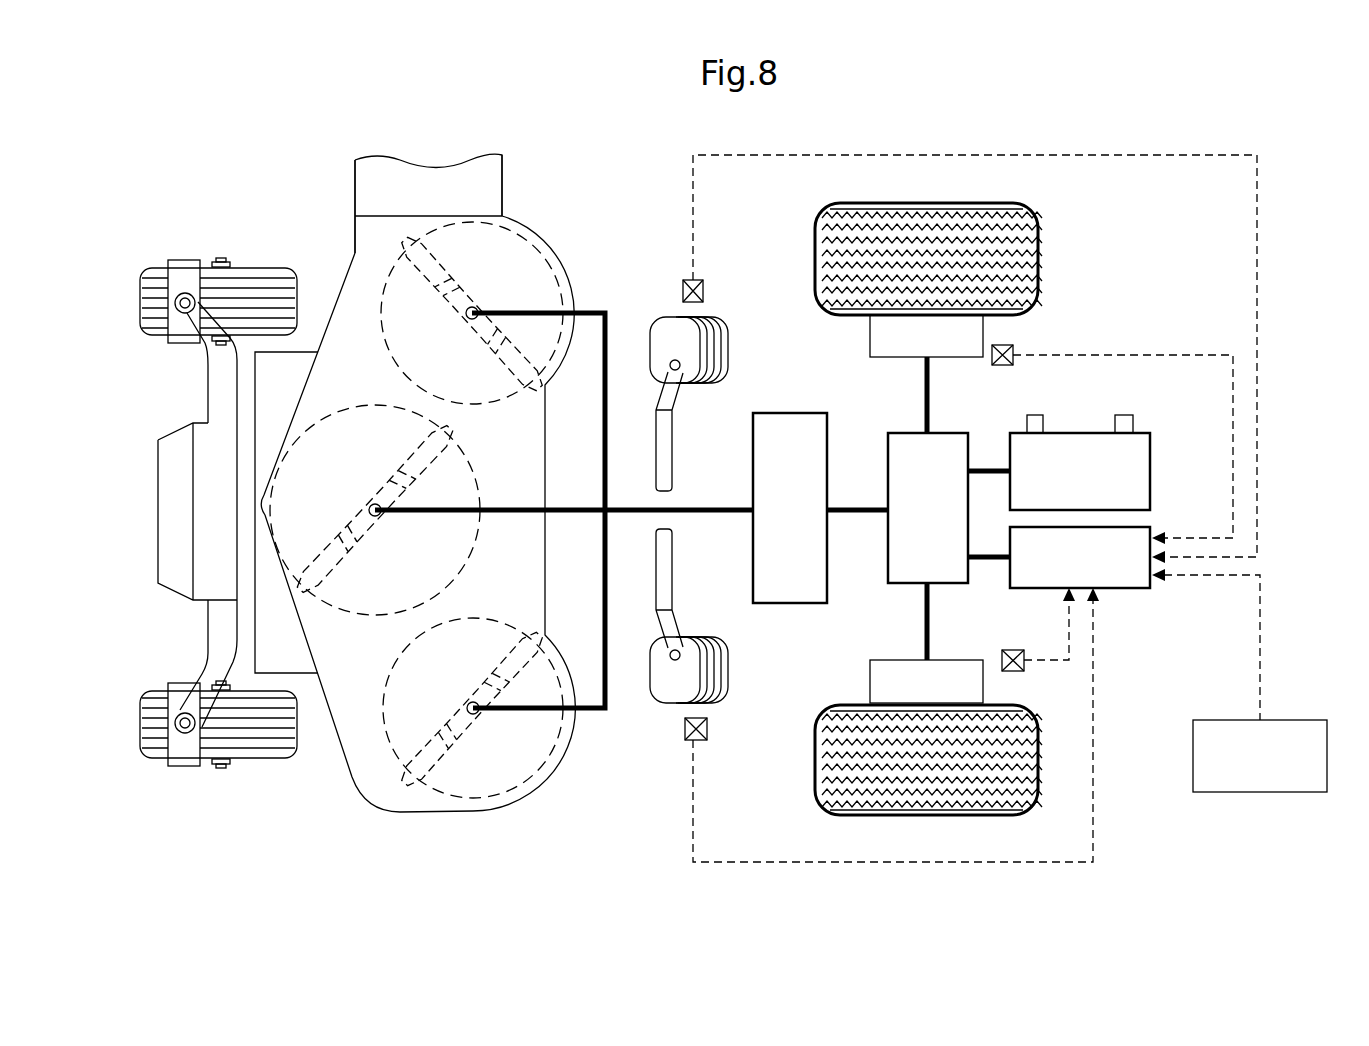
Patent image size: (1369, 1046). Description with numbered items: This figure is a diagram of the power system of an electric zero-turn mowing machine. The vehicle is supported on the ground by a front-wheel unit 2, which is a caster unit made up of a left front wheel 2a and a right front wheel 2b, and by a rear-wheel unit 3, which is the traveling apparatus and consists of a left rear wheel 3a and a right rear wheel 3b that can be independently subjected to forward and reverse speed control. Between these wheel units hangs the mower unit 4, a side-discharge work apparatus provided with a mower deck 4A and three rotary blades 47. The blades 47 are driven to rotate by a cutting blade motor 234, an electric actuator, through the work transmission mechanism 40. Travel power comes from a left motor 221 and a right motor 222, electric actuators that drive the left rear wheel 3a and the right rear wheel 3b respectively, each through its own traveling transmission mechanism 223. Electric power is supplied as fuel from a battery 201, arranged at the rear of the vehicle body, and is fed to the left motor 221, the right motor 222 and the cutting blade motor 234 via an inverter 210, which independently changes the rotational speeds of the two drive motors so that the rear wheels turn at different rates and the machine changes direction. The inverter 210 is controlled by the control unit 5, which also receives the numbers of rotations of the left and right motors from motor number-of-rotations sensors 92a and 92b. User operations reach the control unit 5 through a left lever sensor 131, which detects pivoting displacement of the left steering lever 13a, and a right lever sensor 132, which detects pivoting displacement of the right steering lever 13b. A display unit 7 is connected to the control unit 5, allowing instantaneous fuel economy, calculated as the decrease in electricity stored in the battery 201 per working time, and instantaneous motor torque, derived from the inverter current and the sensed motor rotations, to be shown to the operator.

The front-wheel unit 2 is at (181, 520).
The left front wheel 2a is at (162, 758).
The right front wheel 2b is at (140, 285).
The rear-wheel unit 3 is at (965, 529).
The left rear wheel 3a is at (877, 815).
The right rear wheel 3b is at (1078, 236).
The mower unit 4 is at (310, 259).
The mower deck 4A is at (375, 263).
The control unit 5 is at (1138, 588).
The display unit 7 is at (1283, 720).
The left steering lever 13a is at (672, 565).
The right steering lever 13b is at (672, 453).
The work transmission mechanism 40 is at (585, 503).
The rotary blade 47 is at (527, 387).
The motor number-of-rotations sensor 92a is at (1005, 647).
The motor number-of-rotations sensor 92b is at (1000, 365).
The left lever sensor 131 is at (685, 728).
The right lever sensor 132 is at (683, 291).
The battery 201 is at (1150, 470).
The inverter 210 is at (888, 482).
The left motor 221 is at (870, 683).
The right motor 222 is at (870, 340).
The traveling transmission mechanism 223 is at (927, 397).
The cutting blade motor 234 is at (785, 603).